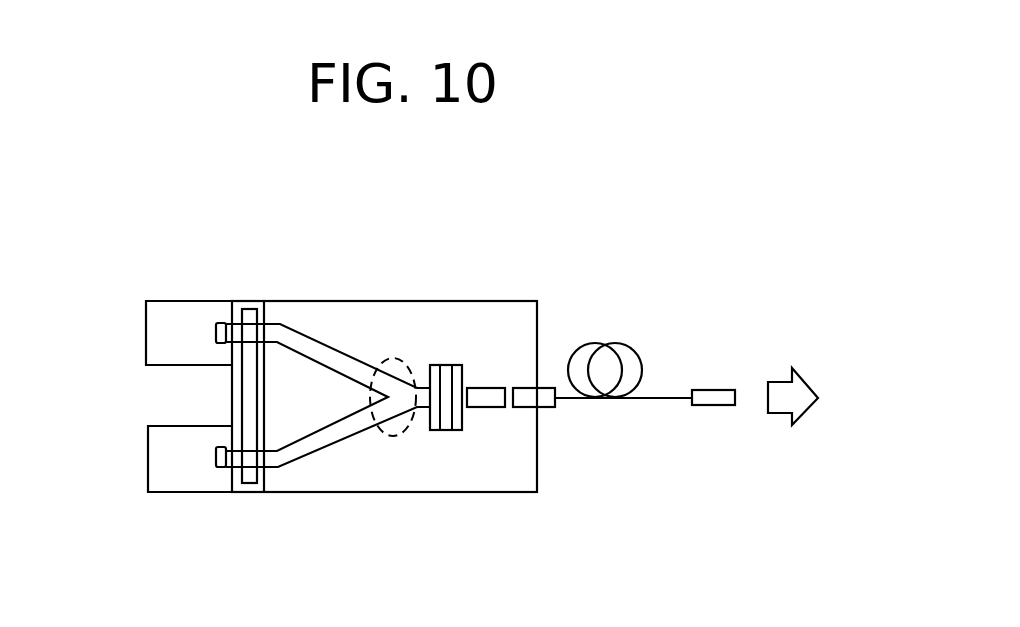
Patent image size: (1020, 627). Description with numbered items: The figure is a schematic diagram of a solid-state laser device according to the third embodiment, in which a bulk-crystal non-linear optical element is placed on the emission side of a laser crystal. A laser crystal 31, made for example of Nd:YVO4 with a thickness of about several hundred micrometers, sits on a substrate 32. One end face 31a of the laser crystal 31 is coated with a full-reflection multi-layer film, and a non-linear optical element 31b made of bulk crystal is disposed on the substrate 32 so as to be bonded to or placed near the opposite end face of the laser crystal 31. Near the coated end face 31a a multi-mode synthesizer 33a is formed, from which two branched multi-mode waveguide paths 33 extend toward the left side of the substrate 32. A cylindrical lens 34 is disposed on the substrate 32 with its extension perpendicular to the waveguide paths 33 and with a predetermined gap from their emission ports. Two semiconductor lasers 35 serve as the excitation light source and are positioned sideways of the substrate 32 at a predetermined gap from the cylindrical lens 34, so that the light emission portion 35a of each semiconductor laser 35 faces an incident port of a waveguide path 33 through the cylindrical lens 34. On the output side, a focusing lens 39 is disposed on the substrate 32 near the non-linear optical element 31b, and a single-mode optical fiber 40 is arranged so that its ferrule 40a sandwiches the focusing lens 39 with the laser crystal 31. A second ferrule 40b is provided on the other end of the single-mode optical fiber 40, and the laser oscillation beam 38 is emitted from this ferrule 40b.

The laser crystal 31 is at (442, 365).
The end face 31a is at (423, 366).
The non-linear optical element 31b is at (455, 365).
The substrate 32 is at (523, 328).
The multi-mode waveguide path 33 is at (306, 342).
The multi-mode synthesizer 33a is at (393, 357).
The cylindrical lens 34 is at (250, 478).
The semiconductor laser 35 is at (150, 320).
The light emission portion 35a is at (222, 467).
The laser oscillation beam 38 is at (783, 382).
The focusing lens 39 is at (487, 407).
The single-mode optical fiber 40 is at (667, 398).
The ferrule 40a is at (545, 403).
The ferrule 40b is at (713, 395).